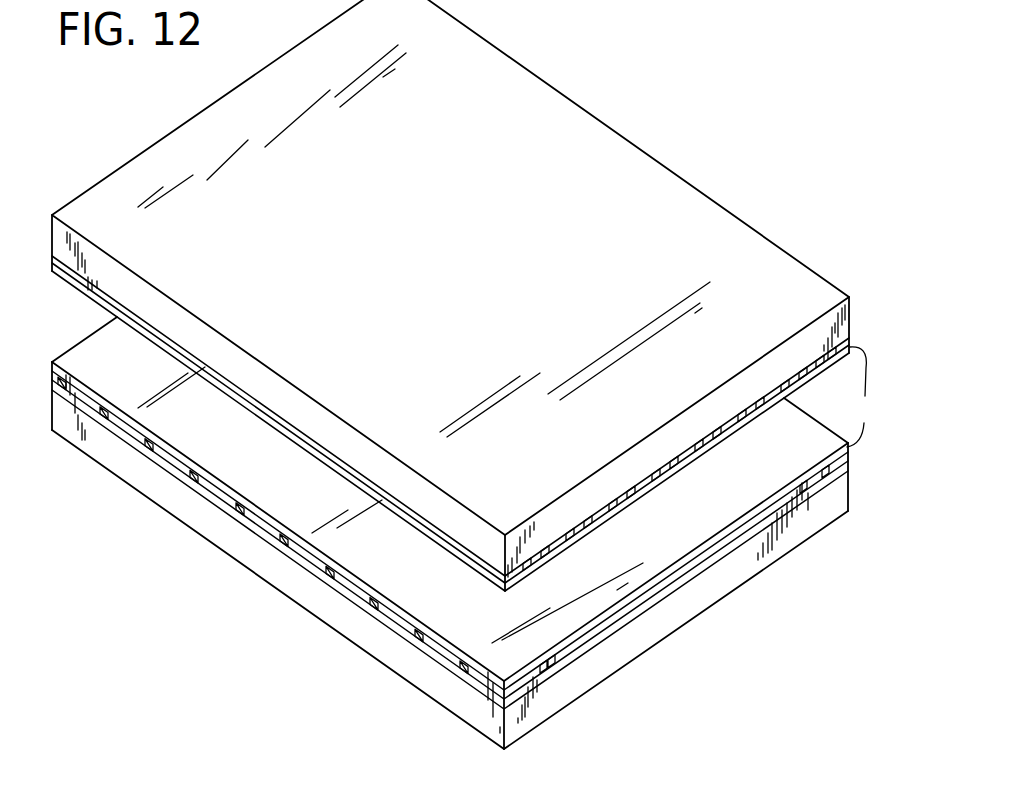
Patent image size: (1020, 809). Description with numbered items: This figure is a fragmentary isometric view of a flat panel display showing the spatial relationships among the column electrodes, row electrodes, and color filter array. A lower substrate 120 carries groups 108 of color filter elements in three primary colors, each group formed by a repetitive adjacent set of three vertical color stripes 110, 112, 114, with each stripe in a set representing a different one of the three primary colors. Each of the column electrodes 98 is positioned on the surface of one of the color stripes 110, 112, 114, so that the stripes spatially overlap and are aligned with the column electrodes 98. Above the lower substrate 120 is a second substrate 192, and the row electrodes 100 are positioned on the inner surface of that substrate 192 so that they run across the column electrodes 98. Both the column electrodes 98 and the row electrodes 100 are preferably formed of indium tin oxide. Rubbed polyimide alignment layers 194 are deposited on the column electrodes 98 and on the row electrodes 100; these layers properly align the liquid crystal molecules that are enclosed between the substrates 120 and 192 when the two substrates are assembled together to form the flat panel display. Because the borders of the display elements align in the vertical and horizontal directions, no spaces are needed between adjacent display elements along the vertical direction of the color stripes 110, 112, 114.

The column electrodes 98 is at (121, 414).
The row electrodes 100 is at (569, 553).
The groups of color filter elements 108 is at (400, 733).
The color stripe 110 is at (77, 412).
The color stripe 112 is at (165, 470).
The color stripe 114 is at (122, 440).
The substrate 120 is at (576, 683).
The substrate 192 is at (302, 294).
The rubbed polyimide alignment layers 194 is at (867, 397).